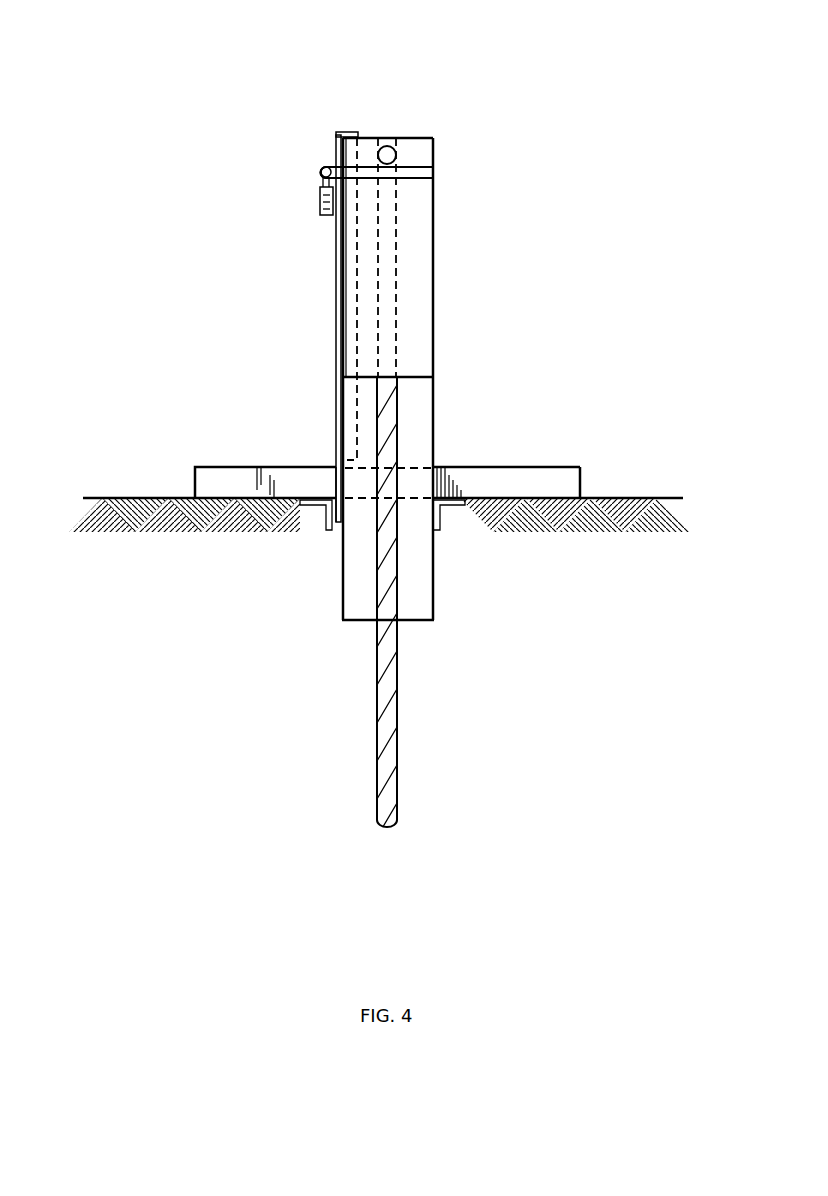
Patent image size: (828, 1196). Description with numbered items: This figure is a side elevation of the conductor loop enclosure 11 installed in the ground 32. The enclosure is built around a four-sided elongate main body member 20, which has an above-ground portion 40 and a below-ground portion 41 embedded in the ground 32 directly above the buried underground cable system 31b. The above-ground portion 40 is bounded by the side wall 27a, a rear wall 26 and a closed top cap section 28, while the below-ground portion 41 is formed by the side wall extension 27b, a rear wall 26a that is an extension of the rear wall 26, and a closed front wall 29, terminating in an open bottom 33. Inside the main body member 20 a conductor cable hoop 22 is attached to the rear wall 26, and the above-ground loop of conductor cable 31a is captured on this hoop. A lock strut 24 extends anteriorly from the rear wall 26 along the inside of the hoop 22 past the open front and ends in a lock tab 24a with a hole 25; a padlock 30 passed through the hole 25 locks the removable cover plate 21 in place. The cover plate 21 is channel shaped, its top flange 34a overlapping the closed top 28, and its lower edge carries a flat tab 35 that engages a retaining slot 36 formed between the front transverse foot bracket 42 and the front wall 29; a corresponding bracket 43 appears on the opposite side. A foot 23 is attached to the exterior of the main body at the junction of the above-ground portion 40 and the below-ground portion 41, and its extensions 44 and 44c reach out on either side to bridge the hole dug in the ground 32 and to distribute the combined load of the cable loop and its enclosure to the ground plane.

The conductor loop enclosure 11 is at (292, 101).
The main body member 20 is at (452, 231).
The cover plate 21 is at (336, 318).
The conductor cable hoop 22 is at (410, 372).
The foot 23 is at (530, 480).
The lock strut 24 is at (410, 178).
The lock tab 24a is at (320, 172).
The hole 25 is at (324, 168).
The rear wall 26 is at (433, 290).
The rear wall 26a is at (433, 590).
The side wall 27a is at (389, 303).
The side wall extension 27b is at (389, 534).
The top cap section 28 is at (370, 135).
The front wall 29 is at (343, 600).
The padlock 30 is at (318, 200).
The above-ground loop of conductor cable 31a is at (390, 146).
The underground cable system 31b is at (390, 792).
The ground 32 is at (122, 498).
The open bottom 33 is at (415, 633).
The top flange 34a is at (345, 132).
The flat tab 35 is at (336, 483).
The retaining slot 36 is at (333, 535).
The above-ground portion 40 is at (472, 323).
The below-ground portion 41 is at (507, 550).
The front transverse foot bracket 42 is at (312, 505).
The right clip 43 is at (448, 505).
The foot extension 44 is at (195, 480).
The foot extension 44c is at (583, 482).